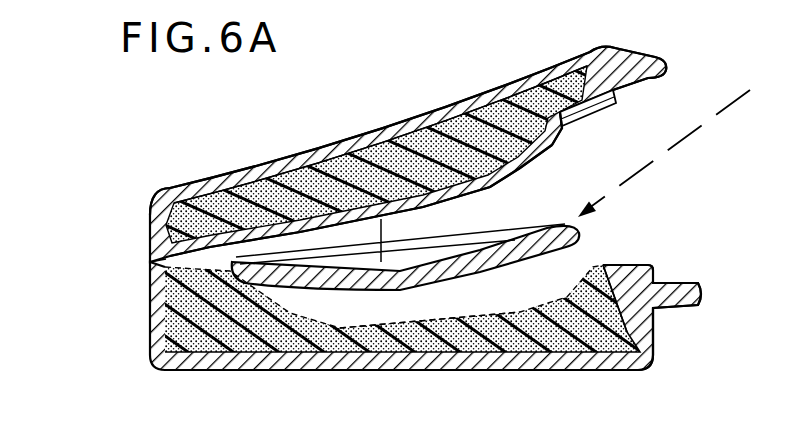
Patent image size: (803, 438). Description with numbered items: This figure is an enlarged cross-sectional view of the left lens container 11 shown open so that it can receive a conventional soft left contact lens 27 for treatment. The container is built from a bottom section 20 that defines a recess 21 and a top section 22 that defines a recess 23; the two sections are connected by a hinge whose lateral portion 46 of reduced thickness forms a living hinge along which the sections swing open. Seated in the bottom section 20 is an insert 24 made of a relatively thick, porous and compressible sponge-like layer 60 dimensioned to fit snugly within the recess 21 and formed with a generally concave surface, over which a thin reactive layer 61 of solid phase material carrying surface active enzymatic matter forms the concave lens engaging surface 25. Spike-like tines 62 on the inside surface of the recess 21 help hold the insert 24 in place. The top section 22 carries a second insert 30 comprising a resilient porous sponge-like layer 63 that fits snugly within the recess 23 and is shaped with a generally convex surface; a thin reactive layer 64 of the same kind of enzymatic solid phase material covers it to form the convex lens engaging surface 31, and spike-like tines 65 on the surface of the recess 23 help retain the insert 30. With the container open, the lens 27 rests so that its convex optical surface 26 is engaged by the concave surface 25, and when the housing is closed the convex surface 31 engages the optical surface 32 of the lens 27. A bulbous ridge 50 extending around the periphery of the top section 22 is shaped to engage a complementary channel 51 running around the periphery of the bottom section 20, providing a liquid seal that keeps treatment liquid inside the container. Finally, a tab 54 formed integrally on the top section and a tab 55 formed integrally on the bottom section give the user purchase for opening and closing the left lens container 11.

The left lens container 11 is at (132, 236).
The bottom section 20 is at (147, 327).
The recess 21 is at (603, 266).
The top section 22 is at (208, 183).
The recess 23 is at (583, 128).
The insert 24 is at (657, 345).
The concave surface 25 is at (393, 327).
The convex optical surface 26 is at (404, 284).
The soft left contact lens 27 is at (580, 228).
The insert 30 is at (479, 92).
The convex surface 31 is at (488, 188).
The convex optical surface 32 is at (403, 122).
The lateral portion of reduced thickness 46 is at (147, 264).
The bulbous ridge 50 is at (617, 98).
The channel 51 is at (640, 275).
The tab 54 is at (640, 50).
The tab 55 is at (681, 307).
The sponge-like layer 60 is at (277, 372).
The reactive layer 61 is at (581, 279).
The spike-like tines 62 is at (184, 372).
The sponge-like layer 63 is at (338, 143).
The reactive layer 64 is at (432, 214).
The spike-like tines 65 is at (167, 196).